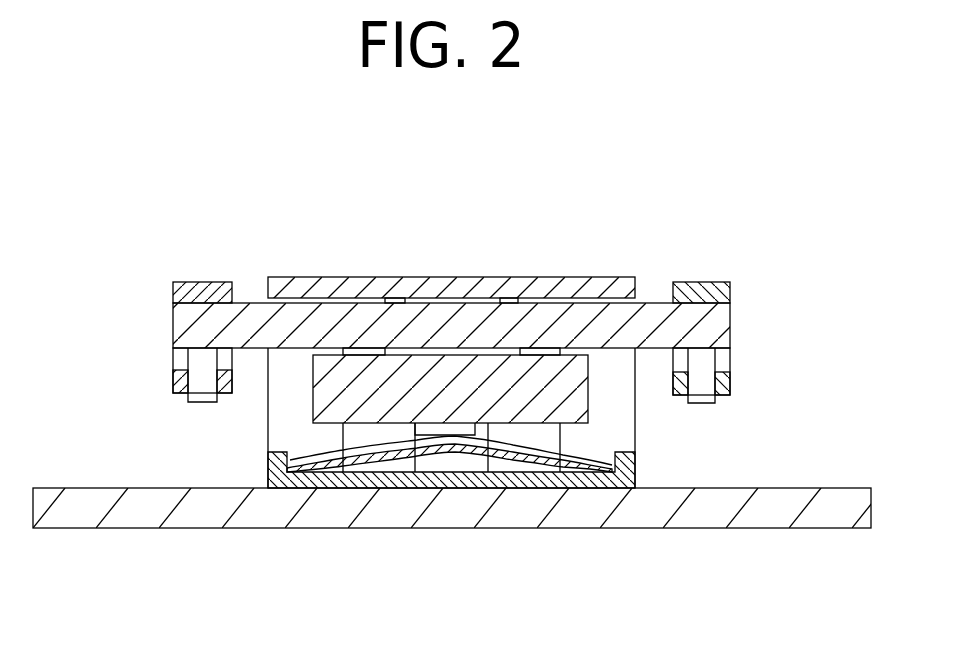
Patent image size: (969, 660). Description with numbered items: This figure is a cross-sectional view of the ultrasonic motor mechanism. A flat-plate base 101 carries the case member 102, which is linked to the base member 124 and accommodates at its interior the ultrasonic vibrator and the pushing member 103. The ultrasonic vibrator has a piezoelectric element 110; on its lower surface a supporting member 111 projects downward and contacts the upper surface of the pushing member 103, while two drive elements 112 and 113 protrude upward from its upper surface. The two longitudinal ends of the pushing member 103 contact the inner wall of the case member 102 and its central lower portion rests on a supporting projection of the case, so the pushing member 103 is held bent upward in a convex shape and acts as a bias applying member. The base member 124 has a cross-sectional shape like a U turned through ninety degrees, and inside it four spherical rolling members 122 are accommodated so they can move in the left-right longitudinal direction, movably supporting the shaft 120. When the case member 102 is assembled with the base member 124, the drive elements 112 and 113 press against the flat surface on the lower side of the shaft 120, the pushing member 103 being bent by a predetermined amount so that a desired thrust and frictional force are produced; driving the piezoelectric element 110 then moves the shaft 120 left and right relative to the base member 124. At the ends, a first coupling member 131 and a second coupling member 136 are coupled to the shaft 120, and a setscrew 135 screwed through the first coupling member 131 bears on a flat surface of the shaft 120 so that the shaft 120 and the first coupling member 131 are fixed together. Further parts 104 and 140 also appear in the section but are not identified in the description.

The base 101 is at (131, 528).
The case member 102 is at (350, 488).
The pushing member 103 is at (525, 462).
The leaf spring upper layer 104 is at (450, 466).
The piezoelectric element 110 is at (580, 400).
The supporting member 111 is at (415, 430).
The drive element 112 is at (362, 350).
The drive element 113 is at (522, 352).
The shaft 120 is at (655, 318).
The rolling members 122 is at (395, 298).
The base member 124 is at (458, 290).
The first coupling member 131 is at (196, 283).
The setscrew 135 is at (200, 360).
The second coupling member 136 is at (713, 282).
The nut 140 is at (705, 360).